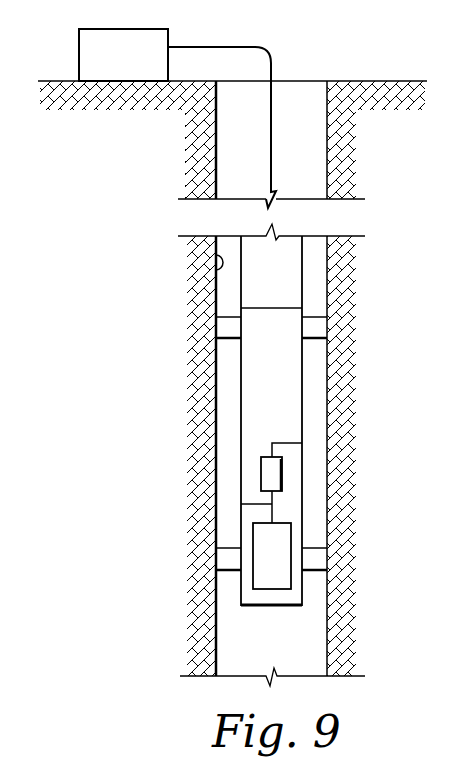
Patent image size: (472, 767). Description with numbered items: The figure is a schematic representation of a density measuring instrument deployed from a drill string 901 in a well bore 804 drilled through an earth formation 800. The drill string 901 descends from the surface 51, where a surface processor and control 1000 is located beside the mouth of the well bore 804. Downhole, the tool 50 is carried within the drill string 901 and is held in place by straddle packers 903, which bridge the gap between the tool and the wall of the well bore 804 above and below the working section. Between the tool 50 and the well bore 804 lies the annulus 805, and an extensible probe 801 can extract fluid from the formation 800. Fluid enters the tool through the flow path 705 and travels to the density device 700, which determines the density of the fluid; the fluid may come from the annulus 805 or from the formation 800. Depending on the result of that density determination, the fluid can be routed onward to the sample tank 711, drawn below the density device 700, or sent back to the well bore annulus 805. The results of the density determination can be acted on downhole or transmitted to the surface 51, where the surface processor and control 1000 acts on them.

The surface 51 is at (50, 81).
The surface processor and control 1000 is at (100, 73).
The formation 800 is at (197, 163).
The annulus 805 is at (302, 174).
The well bore 804 is at (216, 256).
The drill string 901 is at (283, 272).
The straddle packer 903 is at (222, 328).
The tool 50 is at (272, 380).
The extensible probe 801 is at (307, 430).
The flow path 705 is at (288, 442).
The density device 700 is at (268, 473).
The sample tank 711 is at (262, 533).